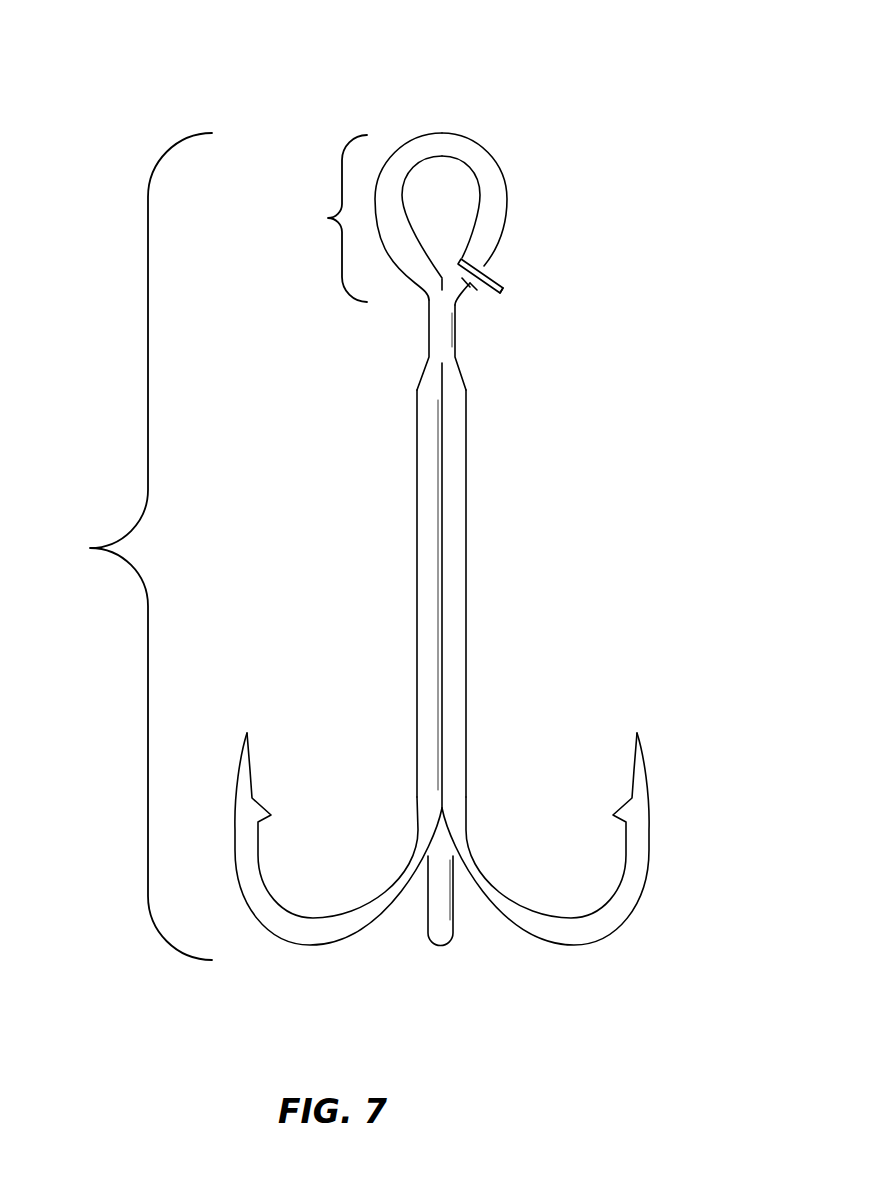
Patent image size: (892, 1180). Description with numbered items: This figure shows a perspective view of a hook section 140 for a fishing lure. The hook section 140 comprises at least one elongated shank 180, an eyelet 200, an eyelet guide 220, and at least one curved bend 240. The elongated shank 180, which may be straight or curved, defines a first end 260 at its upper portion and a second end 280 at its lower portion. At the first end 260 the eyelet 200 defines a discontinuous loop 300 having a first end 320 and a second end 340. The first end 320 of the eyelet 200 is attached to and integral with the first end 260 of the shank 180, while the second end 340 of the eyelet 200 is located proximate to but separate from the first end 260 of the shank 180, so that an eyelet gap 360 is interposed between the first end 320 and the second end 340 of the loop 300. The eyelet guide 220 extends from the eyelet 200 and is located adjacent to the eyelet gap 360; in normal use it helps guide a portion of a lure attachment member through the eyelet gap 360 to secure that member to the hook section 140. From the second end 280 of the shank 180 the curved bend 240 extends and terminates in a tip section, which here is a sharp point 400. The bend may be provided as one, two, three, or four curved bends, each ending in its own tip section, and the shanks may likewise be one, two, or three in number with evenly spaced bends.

The hook section 140 is at (90, 548).
The eyelet 200 is at (328, 218).
The discontinuous loop 300 is at (450, 141).
The second end of the eyelet 340 is at (493, 262).
The eyelet guide 220 is at (503, 285).
The eyelet gap 360 is at (472, 285).
The first end of the eyelet 320 is at (466, 282).
The first end of the elongated shank 260 is at (437, 310).
The elongated shank 180 is at (458, 575).
The second end of the elongated shank 280 is at (457, 788).
The curved bend 240 is at (577, 938).
The sharp point 400 is at (637, 730).